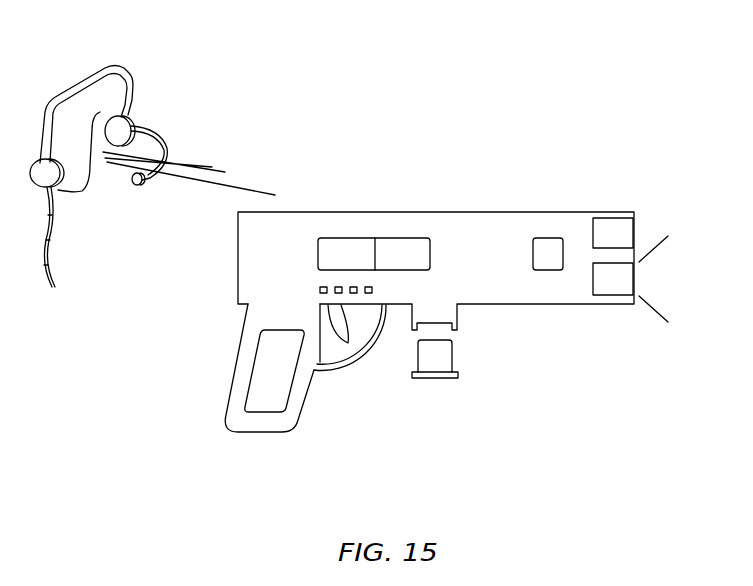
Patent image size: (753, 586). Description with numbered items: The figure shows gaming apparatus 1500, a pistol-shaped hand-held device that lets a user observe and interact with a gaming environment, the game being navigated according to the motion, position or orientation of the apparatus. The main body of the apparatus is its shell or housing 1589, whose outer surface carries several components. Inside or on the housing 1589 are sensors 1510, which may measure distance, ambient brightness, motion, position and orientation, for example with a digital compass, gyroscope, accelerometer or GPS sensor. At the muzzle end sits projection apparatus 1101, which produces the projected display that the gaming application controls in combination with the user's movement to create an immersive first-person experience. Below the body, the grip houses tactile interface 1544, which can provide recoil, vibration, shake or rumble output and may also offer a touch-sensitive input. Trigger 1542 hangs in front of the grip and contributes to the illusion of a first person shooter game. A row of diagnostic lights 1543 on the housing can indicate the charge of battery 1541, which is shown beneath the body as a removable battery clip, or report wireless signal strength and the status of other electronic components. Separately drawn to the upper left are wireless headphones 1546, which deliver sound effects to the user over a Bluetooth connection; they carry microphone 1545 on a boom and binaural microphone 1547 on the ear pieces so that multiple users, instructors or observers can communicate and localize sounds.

The gaming apparatus 1500 is at (434, 120).
The sensors 1510 is at (345, 246).
The housing 1589 is at (457, 211).
The projection apparatus 1101 is at (608, 286).
The diagnostic lights 1543 is at (317, 290).
The tactile interface 1544 is at (262, 352).
The trigger 1542 is at (361, 353).
The battery 1541 is at (445, 380).
The wireless headphones 1546 is at (96, 74).
The binaural microphone 1547 is at (100, 112).
The microphone 1545 is at (138, 188).